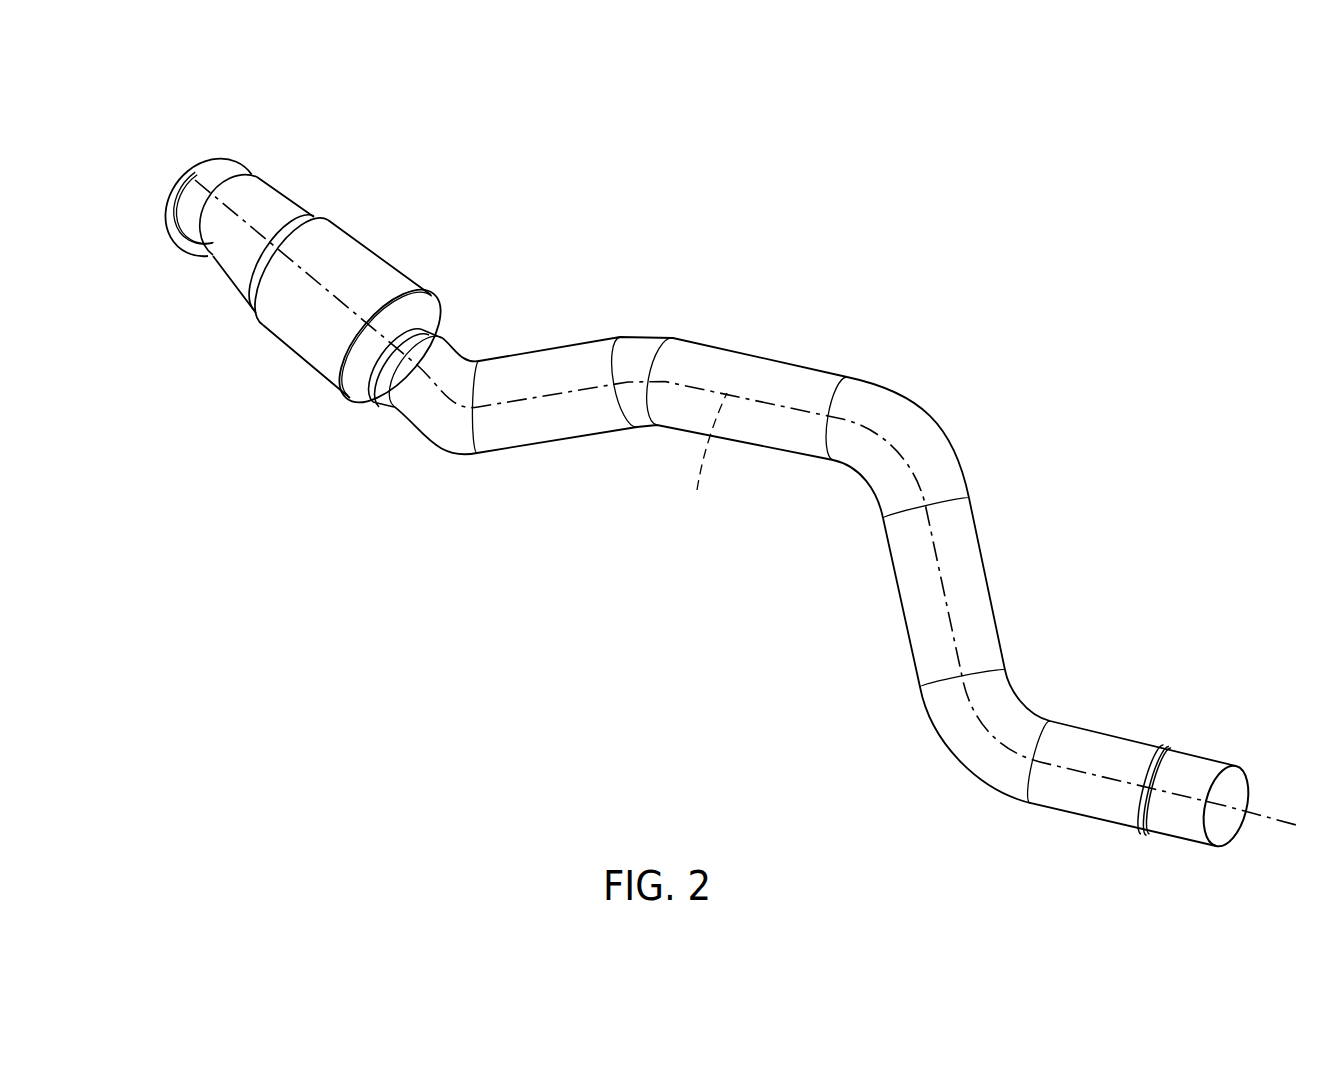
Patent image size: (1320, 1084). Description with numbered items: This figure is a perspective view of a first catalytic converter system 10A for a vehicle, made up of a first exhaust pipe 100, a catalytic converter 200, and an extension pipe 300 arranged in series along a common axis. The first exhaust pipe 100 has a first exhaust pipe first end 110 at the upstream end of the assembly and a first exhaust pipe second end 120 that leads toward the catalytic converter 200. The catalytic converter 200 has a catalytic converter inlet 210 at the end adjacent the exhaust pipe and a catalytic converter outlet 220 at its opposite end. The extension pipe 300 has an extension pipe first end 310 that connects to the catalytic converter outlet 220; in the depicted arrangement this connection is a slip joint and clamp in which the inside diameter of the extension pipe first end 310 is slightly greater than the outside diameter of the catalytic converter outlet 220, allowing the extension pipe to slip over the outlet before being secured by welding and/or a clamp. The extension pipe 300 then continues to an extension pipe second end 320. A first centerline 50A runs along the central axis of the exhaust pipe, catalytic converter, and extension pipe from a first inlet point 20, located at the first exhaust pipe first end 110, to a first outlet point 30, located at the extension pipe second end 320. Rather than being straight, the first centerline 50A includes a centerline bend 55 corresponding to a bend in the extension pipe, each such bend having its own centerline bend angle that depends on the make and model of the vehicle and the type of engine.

The first catalytic converter system 10A is at (701, 500).
The first inlet point 20 is at (173, 183).
The first outlet point 30 is at (1207, 837).
The first centerline 50A is at (703, 460).
The centerline bend 55 is at (974, 454).
The first exhaust pipe 100 is at (208, 200).
The first exhaust pipe first end 110 is at (177, 168).
The first exhaust pipe second end 120 is at (240, 263).
The catalytic converter 200 is at (388, 298).
The catalytic converter inlet 210 is at (314, 222).
The catalytic converter outlet 220 is at (434, 328).
The extension pipe 300 is at (814, 598).
The extension pipe first end 310 is at (410, 357).
The extension pipe second end 320 is at (1227, 767).